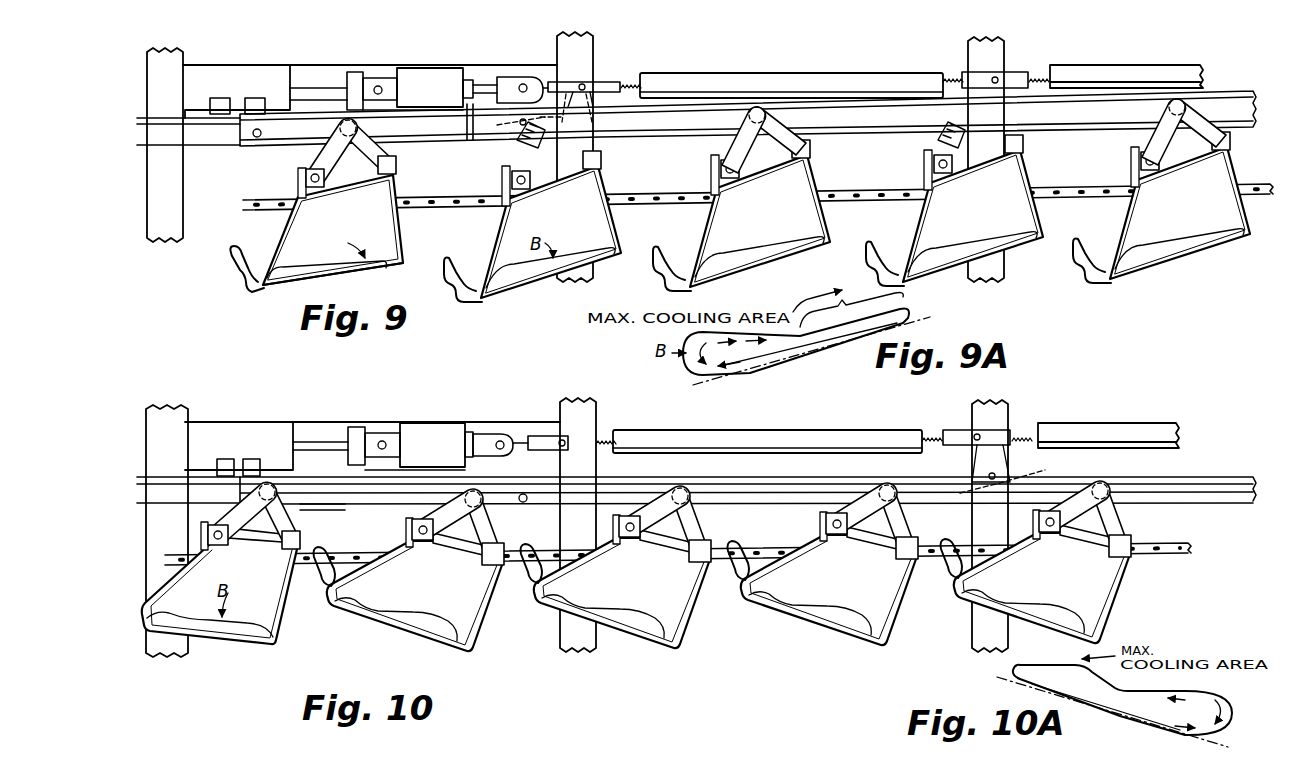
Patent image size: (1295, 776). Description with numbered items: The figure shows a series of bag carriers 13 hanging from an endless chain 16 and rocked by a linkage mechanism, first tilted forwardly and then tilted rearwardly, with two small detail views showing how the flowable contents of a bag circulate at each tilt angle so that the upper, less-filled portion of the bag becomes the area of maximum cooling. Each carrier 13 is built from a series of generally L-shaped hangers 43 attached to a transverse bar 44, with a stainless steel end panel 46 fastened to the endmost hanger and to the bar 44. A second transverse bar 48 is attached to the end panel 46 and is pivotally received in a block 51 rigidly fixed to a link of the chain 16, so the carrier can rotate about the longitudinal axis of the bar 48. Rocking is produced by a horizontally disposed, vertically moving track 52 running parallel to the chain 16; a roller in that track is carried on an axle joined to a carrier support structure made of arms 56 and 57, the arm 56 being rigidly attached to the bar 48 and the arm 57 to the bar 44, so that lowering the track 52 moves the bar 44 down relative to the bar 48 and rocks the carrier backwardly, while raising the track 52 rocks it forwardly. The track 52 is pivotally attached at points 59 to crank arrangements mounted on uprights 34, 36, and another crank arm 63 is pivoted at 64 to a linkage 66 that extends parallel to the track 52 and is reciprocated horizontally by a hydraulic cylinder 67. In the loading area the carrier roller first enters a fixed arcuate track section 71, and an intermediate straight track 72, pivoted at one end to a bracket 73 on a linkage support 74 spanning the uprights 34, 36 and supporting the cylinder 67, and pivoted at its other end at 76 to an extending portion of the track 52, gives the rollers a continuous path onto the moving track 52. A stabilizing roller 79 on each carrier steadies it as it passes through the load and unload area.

In FIG. 9, the carrier 13 is at (311, 216).
In FIG. 9A, the carrier 13 is at (808, 353).
In FIG. 10, the carrier 13 is at (842, 643).
In FIG. 10A, the carrier 13 is at (1040, 692).
In FIG. 9, the endless chain 16 is at (885, 193).
In FIG. 10, the endless chain 16 is at (1183, 556).
In FIG. 9, the upright 34 is at (170, 72).
In FIG. 10, the upright 34 is at (172, 660).
In FIG. 9, the upright 36 is at (580, 47).
In FIG. 10, the upright 36 is at (585, 643).
In FIG. 9, the L-shaped hanger 43 is at (333, 288).
In FIG. 9, the transverse bar 44 is at (376, 191).
In FIG. 10, the transverse bar 44 is at (1102, 561).
In FIG. 9, the end panel 46 is at (325, 230).
In FIG. 9, the second transverse bar 48 is at (323, 197).
In FIG. 10, the second transverse bar 48 is at (1044, 542).
In FIG. 9, the block 51 is at (277, 181).
In FIG. 9, the track 52 is at (653, 143).
In FIG. 10, the track 52 is at (797, 470).
In FIG. 9, the arm 56 is at (318, 151).
In FIG. 9, the arm 57 is at (384, 154).
In FIG. 9, the pivot point 59 is at (527, 127).
In FIG. 9, the crank arm 63 is at (608, 88).
In FIG. 10, the crank arm 63 is at (1010, 437).
In FIG. 9, the pivot point 64 is at (587, 78).
In FIG. 9, the linkage 66 is at (812, 70).
In FIG. 10, the linkage 66 is at (785, 430).
In FIG. 9, the hydraulic cylinder 67 is at (437, 70).
In FIG. 10, the hydraulic cylinder 67 is at (442, 432).
In FIG. 9, the fixed arcuate track section 71 is at (207, 153).
In FIG. 9, the intermediate track section 72 is at (423, 138).
In FIG. 10, the intermediate track section 72 is at (334, 512).
In FIG. 9, the bracket 73 is at (255, 98).
In FIG. 9, the linkage support 74 is at (315, 65).
In FIG. 10, the linkage support 74 is at (282, 423).
In FIG. 9, the pivot point 76 is at (446, 123).
In FIG. 9, the stabilizing roller 79 is at (221, 265).